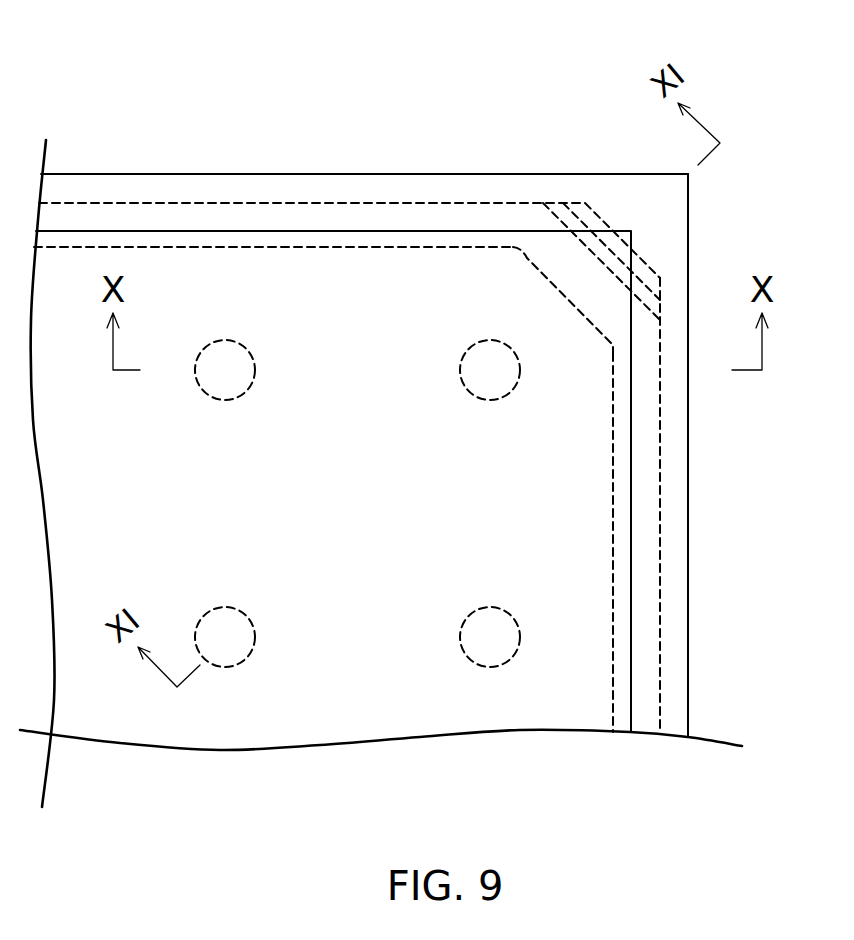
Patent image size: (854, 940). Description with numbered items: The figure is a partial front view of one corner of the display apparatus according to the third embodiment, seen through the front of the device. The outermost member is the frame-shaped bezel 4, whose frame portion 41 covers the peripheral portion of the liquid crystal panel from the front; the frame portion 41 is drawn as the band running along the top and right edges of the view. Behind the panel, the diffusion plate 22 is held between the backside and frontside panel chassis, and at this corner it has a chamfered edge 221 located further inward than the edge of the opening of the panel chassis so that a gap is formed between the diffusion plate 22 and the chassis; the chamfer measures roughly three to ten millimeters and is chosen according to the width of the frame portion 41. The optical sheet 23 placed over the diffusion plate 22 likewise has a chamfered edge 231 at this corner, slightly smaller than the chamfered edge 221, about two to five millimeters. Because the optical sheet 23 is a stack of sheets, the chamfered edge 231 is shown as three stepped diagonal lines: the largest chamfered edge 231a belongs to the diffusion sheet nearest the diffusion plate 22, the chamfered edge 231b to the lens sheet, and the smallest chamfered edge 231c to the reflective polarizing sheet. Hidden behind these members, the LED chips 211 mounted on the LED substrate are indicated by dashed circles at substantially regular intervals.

The bezel 4 is at (300, 142).
The frame portion 41 is at (128, 182).
The diffusion plate 22 is at (411, 412).
The chamfered edge 221 is at (523, 262).
The optical sheet 23 is at (413, 387).
The chamfered edge 231 is at (621, 181).
The chamfered edge 231a is at (545, 200).
The chamfered edge 231b is at (575, 197).
The chamfered edge 231c is at (610, 228).
The LED chips 211 is at (243, 393).